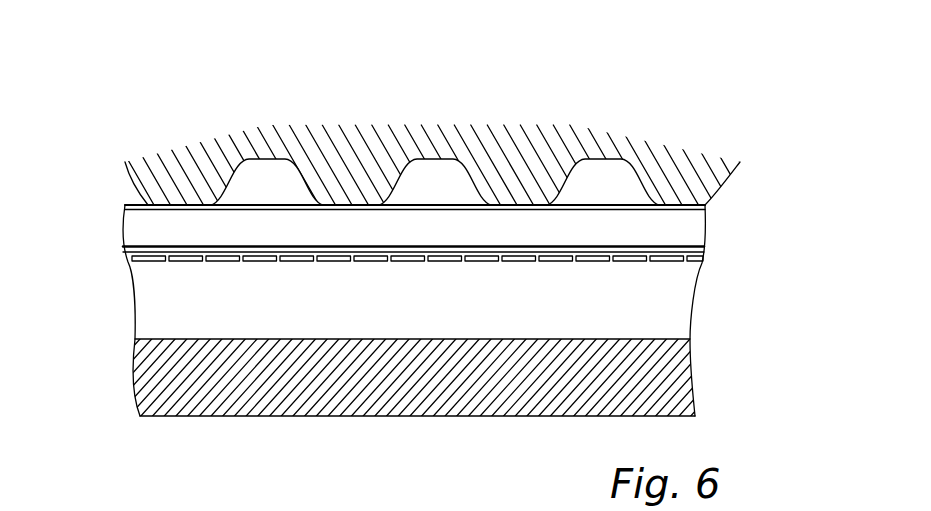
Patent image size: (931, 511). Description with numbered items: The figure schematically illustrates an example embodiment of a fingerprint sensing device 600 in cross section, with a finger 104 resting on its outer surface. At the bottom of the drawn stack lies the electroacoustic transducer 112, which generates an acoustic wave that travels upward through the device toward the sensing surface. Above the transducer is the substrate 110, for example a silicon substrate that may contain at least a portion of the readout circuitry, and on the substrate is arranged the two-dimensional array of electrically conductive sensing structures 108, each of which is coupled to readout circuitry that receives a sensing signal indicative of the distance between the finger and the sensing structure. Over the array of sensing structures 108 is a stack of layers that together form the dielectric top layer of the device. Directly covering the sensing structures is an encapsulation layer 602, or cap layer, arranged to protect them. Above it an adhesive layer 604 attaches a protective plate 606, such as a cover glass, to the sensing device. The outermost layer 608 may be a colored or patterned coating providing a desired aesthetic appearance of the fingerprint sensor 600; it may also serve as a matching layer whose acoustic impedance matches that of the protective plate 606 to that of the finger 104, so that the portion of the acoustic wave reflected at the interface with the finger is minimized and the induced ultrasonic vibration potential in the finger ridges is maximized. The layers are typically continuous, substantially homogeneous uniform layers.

The finger 104 is at (188, 170).
The electrically conductive sensing structures 108 is at (138, 261).
The substrate 110 is at (670, 328).
The electroacoustic transducer 112 is at (672, 380).
The fingerprint sensing device 600 is at (112, 178).
The encapsulation layer 602 is at (703, 258).
The adhesive layer 604 is at (703, 248).
The protective plate 606 is at (703, 237).
The outermost layer 608 is at (705, 208).